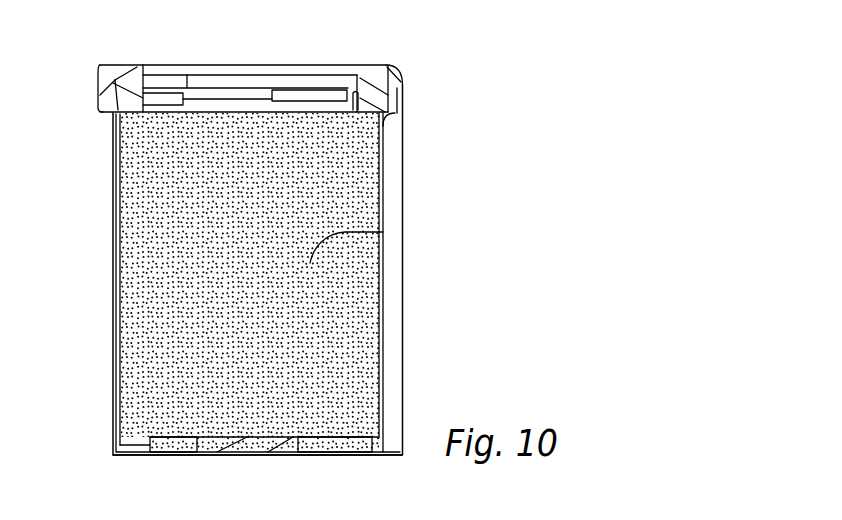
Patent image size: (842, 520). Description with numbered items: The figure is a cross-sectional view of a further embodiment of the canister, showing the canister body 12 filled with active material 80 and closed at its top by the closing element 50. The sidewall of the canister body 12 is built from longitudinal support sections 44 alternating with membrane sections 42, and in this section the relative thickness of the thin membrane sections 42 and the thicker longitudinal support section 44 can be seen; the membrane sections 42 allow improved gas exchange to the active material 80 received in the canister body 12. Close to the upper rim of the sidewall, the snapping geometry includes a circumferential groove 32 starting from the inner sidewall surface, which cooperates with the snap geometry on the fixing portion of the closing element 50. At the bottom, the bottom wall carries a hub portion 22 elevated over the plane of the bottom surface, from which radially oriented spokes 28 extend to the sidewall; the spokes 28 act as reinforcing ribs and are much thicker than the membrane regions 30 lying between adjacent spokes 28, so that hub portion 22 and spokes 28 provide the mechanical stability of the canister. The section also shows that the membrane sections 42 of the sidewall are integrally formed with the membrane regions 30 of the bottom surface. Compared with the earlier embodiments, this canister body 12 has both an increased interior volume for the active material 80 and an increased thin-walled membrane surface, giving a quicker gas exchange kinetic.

The canister body 12 is at (445, 127).
The hub portion 22 is at (253, 443).
The spokes 28 is at (186, 456).
The membrane regions 30 is at (152, 455).
The groove 32 is at (404, 79).
The membrane sections 42 is at (380, 297).
The longitudinal support sections 44 is at (393, 202).
The closing element 50 is at (266, 57).
The active material 80 is at (380, 233).